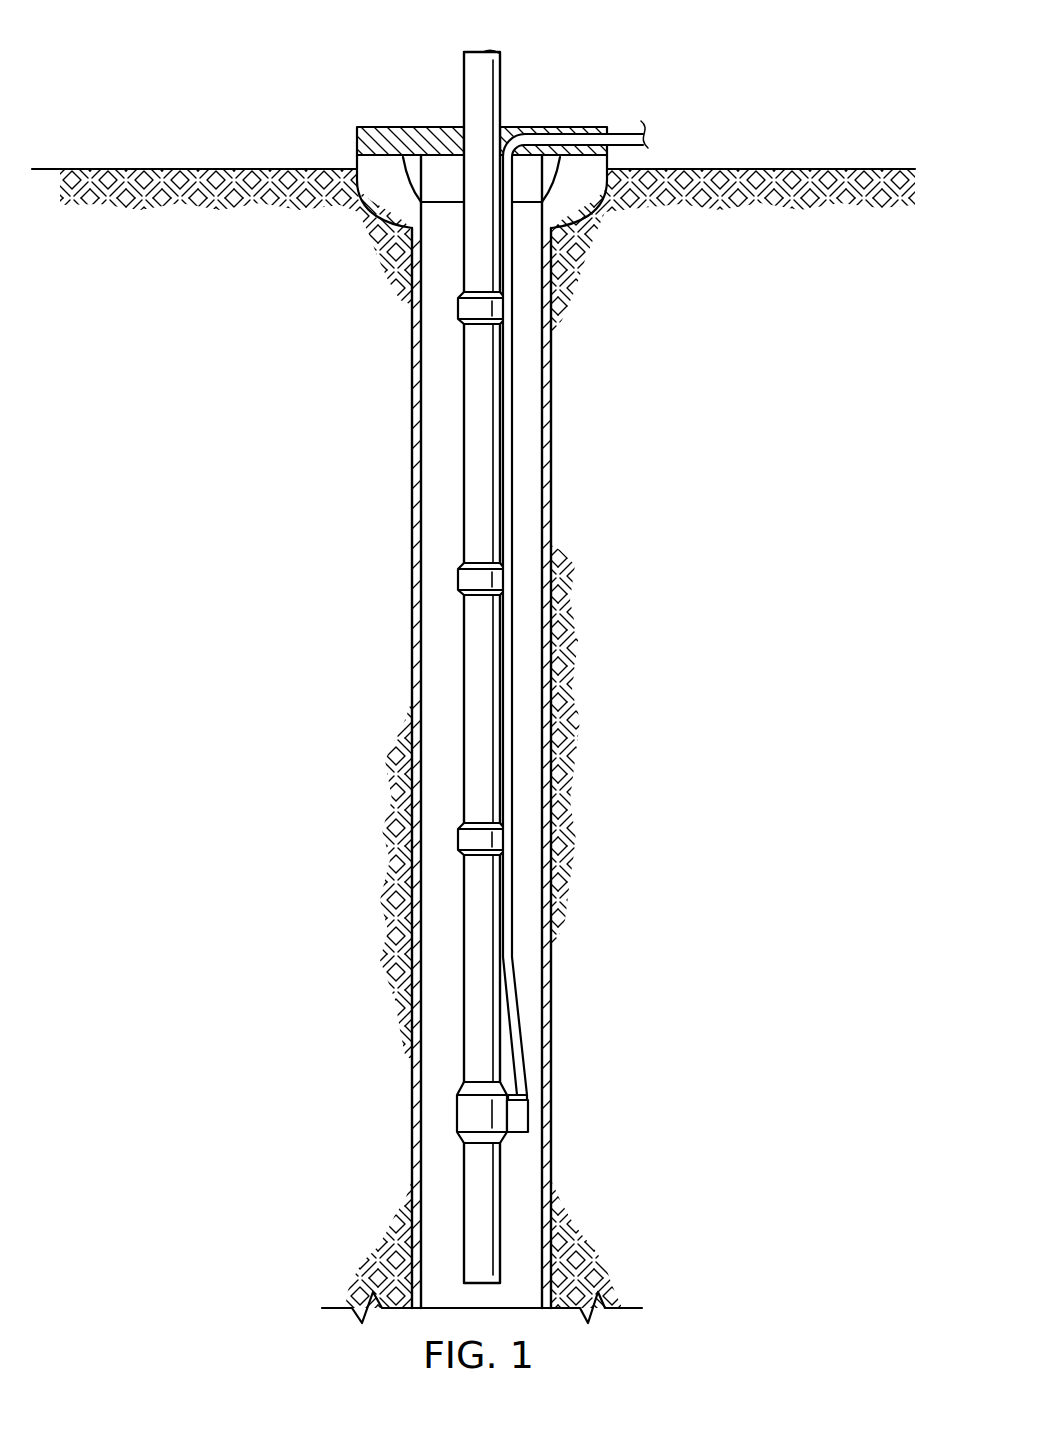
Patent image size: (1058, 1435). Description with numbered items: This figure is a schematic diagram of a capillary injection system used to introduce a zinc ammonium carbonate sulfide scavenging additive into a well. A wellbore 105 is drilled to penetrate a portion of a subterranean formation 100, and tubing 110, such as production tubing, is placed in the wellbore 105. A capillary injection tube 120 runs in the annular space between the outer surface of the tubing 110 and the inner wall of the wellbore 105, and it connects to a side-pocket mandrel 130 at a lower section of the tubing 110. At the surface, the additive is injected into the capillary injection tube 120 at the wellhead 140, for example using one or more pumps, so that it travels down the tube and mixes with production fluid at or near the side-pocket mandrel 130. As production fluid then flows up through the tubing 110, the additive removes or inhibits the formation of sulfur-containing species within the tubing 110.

The subterranean formation 100 is at (668, 90).
The wellbore 105 is at (412, 368).
The tubing 110 is at (477, 627).
The capillary injection tube 120 is at (515, 347).
The side-pocket mandrel 130 is at (530, 1113).
The wellhead 140 is at (464, 122).